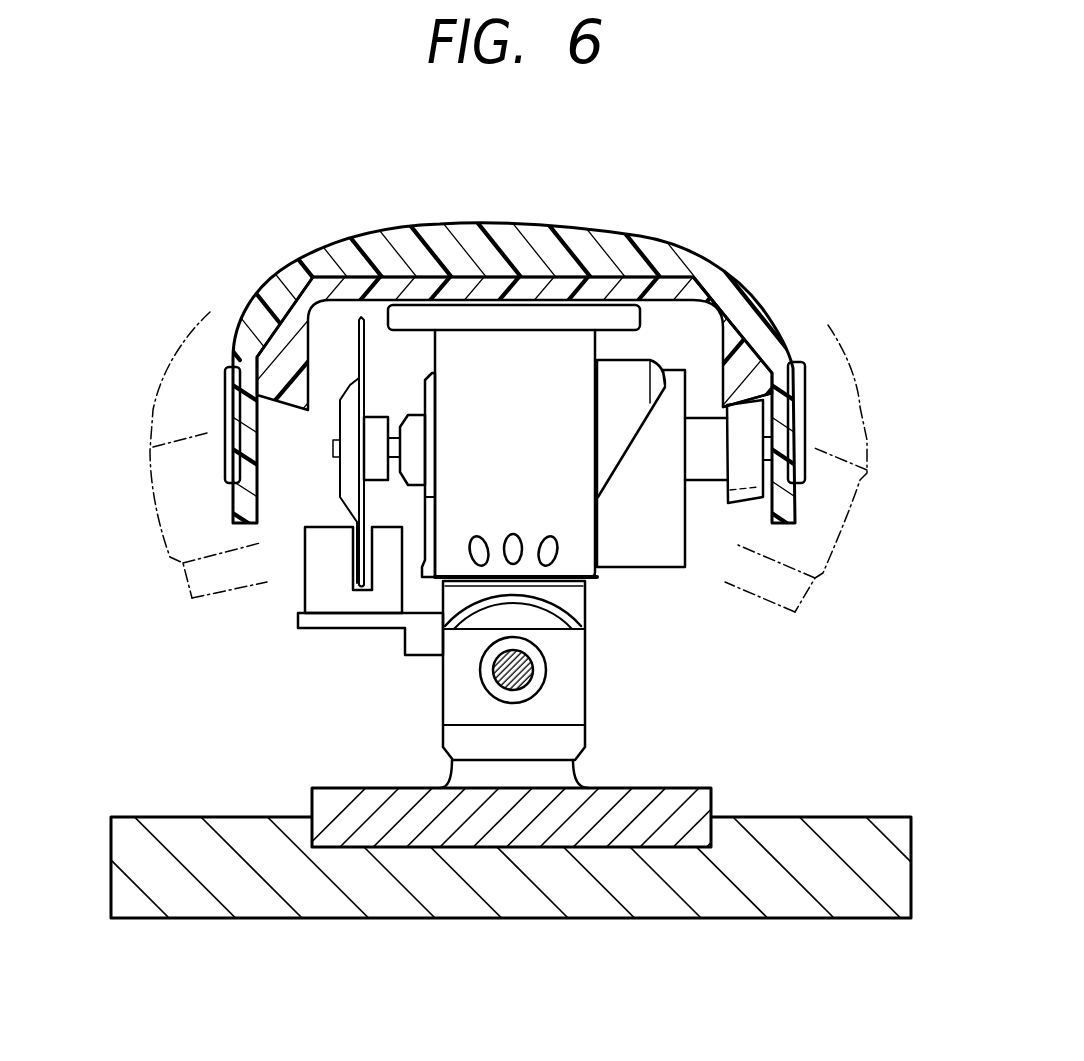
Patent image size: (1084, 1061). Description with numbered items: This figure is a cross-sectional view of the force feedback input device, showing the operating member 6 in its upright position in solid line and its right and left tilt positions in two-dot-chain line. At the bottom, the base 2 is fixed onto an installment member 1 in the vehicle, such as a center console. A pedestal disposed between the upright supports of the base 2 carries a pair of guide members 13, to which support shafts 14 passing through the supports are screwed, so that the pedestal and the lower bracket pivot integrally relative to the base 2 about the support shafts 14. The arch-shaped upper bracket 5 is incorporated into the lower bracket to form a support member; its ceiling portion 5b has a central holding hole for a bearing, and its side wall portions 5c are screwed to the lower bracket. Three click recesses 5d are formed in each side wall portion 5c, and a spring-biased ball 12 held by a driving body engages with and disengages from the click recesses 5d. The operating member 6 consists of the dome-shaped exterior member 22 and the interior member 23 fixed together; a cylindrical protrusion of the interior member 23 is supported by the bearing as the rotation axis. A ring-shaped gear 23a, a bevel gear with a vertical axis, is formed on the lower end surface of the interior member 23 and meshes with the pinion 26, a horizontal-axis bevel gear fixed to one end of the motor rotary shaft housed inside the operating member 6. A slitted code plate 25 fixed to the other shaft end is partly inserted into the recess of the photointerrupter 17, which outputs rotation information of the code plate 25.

The installment member 1 is at (123, 907).
The base 2 is at (663, 836).
The upper bracket 5 is at (544, 397).
The ceiling portion 5b is at (523, 318).
The side wall portions 5c is at (497, 348).
The click recesses 5d is at (556, 548).
The operating member 6 is at (183, 357).
The ball 12 is at (403, 633).
The guide members 13 is at (570, 670).
The support shafts 14 is at (507, 668).
The photointerrupter 17 is at (350, 487).
The exterior member 22 is at (333, 258).
The interior member 23 is at (300, 298).
The ring-shaped gear 23a is at (735, 392).
The code plate 25 is at (323, 592).
The pinion 26 is at (745, 435).